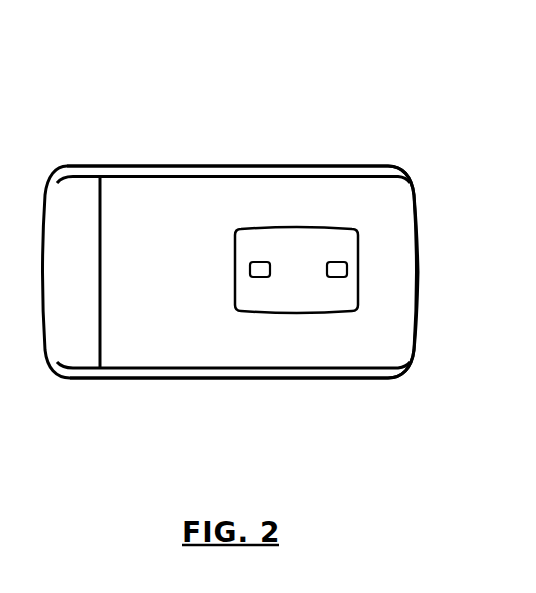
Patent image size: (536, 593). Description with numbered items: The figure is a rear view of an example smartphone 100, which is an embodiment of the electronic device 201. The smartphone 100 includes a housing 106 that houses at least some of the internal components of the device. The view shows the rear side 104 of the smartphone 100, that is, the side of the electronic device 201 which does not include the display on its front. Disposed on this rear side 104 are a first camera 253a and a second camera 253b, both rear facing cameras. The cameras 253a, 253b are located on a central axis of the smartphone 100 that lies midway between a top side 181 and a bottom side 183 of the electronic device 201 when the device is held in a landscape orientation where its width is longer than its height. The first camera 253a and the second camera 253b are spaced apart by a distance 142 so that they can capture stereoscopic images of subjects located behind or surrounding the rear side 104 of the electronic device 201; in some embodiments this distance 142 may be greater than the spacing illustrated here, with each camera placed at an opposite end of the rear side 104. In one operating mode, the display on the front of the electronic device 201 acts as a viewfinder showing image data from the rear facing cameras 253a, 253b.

The smartphone 100 is at (166, 80).
The electronic device 201 is at (119, 106).
The top side 181 is at (383, 165).
The bottom side 183 is at (118, 380).
The rear side 104 is at (406, 212).
The housing 106 is at (416, 317).
The first camera 253a is at (255, 261).
The second camera 253b is at (325, 261).
The distance 142 is at (309, 206).